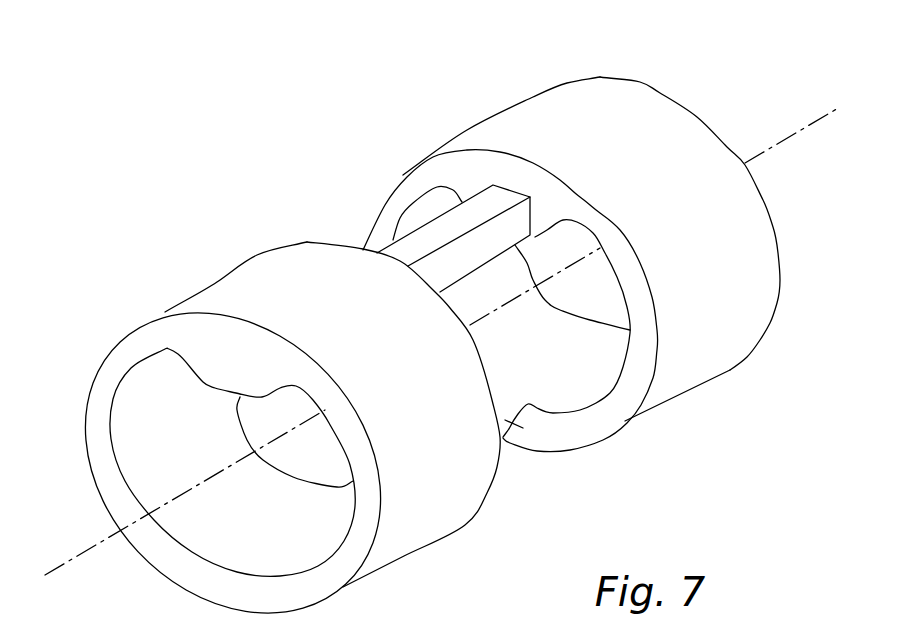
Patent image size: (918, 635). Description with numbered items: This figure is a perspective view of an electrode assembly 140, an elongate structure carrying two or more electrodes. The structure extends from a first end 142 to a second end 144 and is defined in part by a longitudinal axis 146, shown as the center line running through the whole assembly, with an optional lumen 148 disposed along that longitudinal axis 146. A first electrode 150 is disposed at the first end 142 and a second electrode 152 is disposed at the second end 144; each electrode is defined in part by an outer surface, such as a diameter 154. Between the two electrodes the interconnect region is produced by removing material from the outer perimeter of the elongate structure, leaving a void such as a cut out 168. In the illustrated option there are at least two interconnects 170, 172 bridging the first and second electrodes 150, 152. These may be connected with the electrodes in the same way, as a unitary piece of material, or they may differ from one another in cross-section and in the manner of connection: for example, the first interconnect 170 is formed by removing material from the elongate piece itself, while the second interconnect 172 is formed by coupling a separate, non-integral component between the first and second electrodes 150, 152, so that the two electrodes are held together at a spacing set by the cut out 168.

The electrode assembly 140 is at (194, 143).
The first end 142 is at (662, 90).
The second end 144 is at (163, 573).
The longitudinal axis 146 is at (187, 487).
The lumen 148 is at (232, 562).
The first electrode 150 is at (577, 77).
The second electrode 152 is at (86, 445).
The diameter 154 is at (688, 391).
The cut out 168 is at (508, 483).
The first interconnect 170 is at (520, 430).
The second interconnect 172 is at (420, 237).